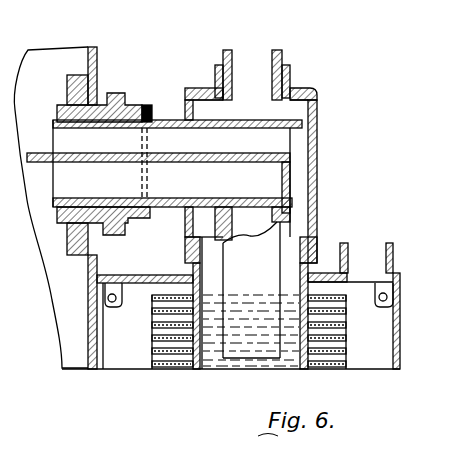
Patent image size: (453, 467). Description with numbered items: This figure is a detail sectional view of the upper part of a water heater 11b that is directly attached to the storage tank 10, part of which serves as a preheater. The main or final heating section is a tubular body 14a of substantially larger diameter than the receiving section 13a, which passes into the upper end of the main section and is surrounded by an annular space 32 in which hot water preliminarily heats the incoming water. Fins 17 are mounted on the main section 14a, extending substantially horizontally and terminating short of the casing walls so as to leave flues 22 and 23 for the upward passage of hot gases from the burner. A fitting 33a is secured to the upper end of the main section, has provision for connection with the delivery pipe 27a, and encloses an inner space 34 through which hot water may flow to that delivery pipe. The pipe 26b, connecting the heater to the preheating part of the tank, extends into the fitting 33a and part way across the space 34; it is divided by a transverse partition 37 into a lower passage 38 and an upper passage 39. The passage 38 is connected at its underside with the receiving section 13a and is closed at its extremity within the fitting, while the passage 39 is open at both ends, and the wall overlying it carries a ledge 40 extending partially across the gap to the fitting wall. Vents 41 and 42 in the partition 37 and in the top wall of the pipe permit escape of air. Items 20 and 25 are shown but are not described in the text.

The storage tank 10 is at (65, 295).
The pipe 26b is at (170, 120).
The upper passage 39 is at (63, 141).
The lower passage 38 is at (63, 180).
The transverse partition 37 is at (119, 162).
The vent 41 is at (252, 154).
The inner space 34 is at (300, 158).
The delivery pipe 27a is at (255, 58).
The ledge 40 is at (320, 108).
The vent 42 is at (246, 132).
The fitting 33a is at (314, 186).
The receiving section 13a is at (272, 262).
The heater 11b is at (278, 369).
The tubular body 14a is at (204, 357).
The flue 22 is at (127, 355).
The left gland plate 20 is at (153, 275).
The fins 17 is at (172, 338).
The annular space 32 is at (296, 278).
The right pipe 25 is at (373, 245).
The flue 23 is at (378, 355).